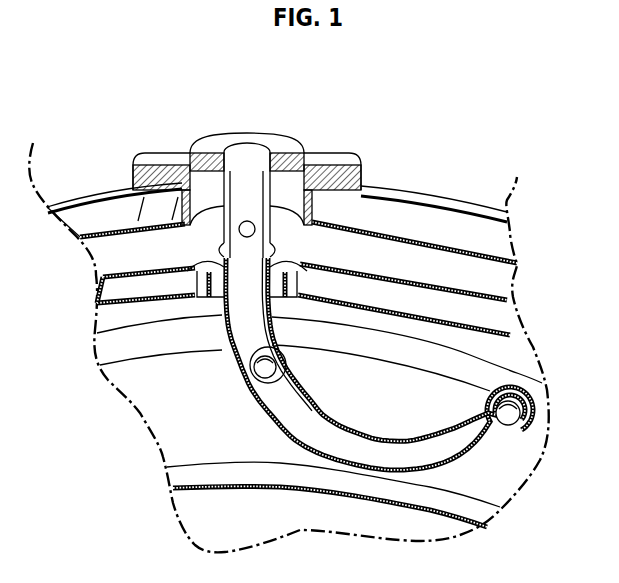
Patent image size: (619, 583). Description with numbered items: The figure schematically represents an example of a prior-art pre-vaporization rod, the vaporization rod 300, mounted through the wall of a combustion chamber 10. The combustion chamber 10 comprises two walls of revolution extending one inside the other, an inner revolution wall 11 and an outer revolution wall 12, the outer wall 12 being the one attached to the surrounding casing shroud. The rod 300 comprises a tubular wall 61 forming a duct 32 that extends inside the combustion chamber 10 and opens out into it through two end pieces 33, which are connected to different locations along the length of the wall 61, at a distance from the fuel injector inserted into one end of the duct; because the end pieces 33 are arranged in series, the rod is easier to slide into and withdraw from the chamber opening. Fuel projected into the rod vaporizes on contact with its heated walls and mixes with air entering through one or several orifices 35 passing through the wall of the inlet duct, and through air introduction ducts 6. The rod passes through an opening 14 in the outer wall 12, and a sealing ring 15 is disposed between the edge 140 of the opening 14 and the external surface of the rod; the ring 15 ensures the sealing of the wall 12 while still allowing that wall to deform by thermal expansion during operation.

The combustion chamber 10 is at (392, 392).
The inner revolution wall 11 is at (441, 502).
The outer revolution wall 12 is at (472, 305).
The opening 14 is at (307, 285).
The sealing ring 15 is at (220, 290).
The duct 6 is at (123, 252).
The duct 32 is at (292, 421).
The end pieces 33 is at (255, 371).
The orifices 35 is at (248, 229).
The tubular wall 61 is at (428, 458).
The edge of the opening 140 is at (180, 283).
The vaporization rod 300 is at (332, 455).